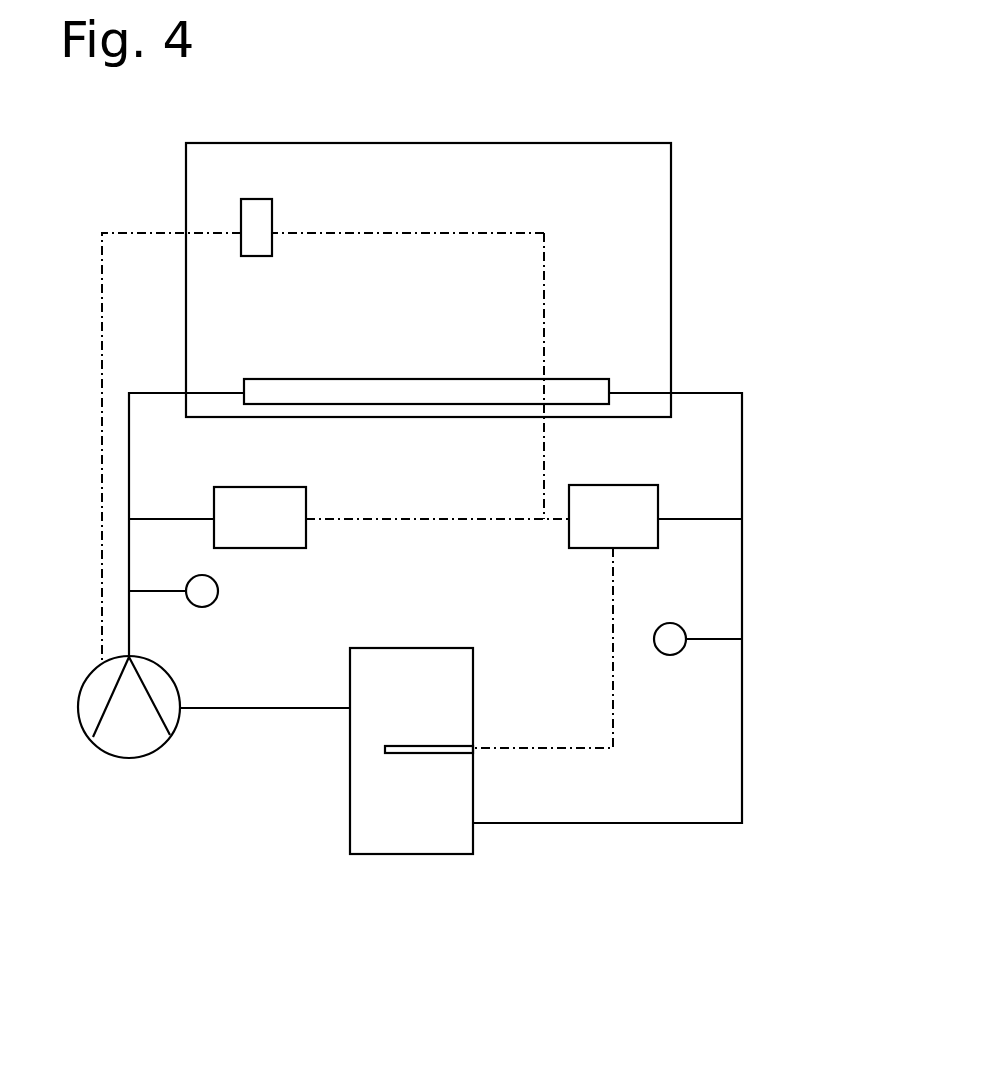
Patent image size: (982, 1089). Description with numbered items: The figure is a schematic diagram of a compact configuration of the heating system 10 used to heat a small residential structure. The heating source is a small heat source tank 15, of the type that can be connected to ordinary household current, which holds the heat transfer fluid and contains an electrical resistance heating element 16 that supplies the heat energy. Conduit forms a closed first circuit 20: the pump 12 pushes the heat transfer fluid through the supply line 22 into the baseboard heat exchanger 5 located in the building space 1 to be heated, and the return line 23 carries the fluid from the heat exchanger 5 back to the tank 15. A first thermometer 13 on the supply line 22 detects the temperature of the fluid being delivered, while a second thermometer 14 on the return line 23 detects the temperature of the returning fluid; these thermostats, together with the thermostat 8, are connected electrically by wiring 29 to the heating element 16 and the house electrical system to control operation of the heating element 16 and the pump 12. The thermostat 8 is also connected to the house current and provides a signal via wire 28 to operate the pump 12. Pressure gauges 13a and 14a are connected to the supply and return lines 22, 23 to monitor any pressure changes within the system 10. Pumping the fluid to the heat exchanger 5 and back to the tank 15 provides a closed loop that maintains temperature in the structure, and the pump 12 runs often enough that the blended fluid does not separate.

The heating system 10 is at (487, 80).
The building space 1 is at (637, 143).
The thermostat 8 is at (262, 210).
The wire 28 is at (102, 312).
The wiring 29 is at (611, 617).
The baseboard heat exchanger 5 is at (446, 379).
The first circuit 20 is at (702, 852).
The supply line 22 is at (129, 516).
The return line 23 is at (742, 585).
The first thermometer 13 is at (306, 498).
The second thermometer 14 is at (596, 485).
The pressure gauge 13a is at (218, 595).
The pressure gauge 14a is at (660, 655).
The pump 12 is at (172, 676).
The heat source tank 15 is at (390, 648).
The heating element 16 is at (453, 753).